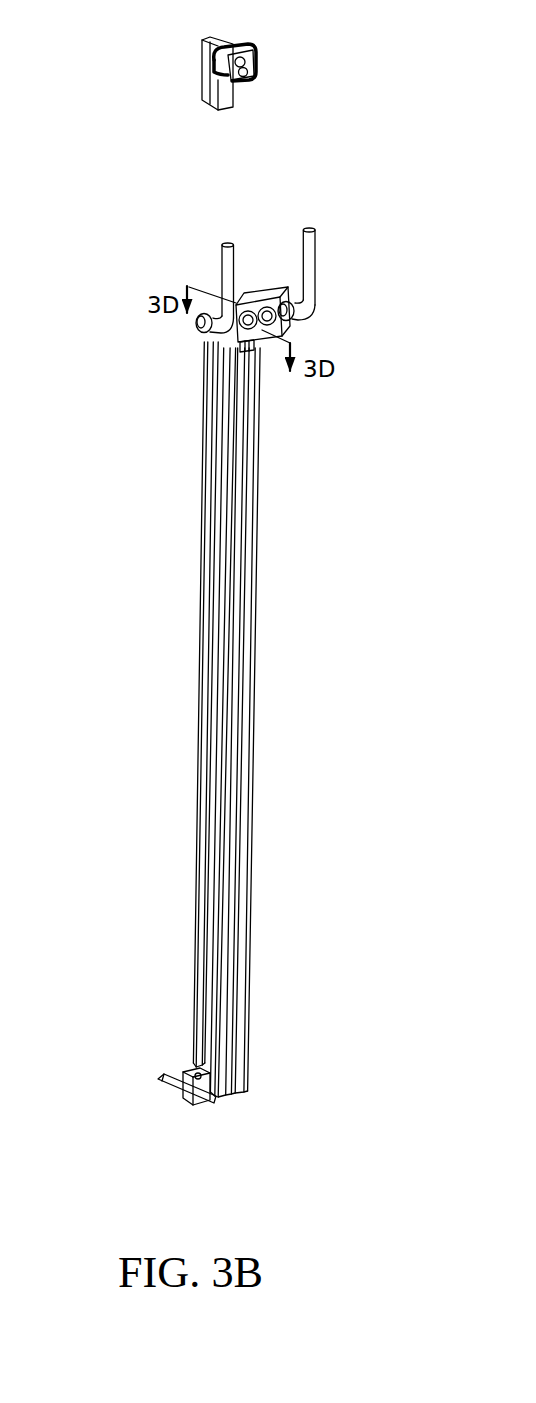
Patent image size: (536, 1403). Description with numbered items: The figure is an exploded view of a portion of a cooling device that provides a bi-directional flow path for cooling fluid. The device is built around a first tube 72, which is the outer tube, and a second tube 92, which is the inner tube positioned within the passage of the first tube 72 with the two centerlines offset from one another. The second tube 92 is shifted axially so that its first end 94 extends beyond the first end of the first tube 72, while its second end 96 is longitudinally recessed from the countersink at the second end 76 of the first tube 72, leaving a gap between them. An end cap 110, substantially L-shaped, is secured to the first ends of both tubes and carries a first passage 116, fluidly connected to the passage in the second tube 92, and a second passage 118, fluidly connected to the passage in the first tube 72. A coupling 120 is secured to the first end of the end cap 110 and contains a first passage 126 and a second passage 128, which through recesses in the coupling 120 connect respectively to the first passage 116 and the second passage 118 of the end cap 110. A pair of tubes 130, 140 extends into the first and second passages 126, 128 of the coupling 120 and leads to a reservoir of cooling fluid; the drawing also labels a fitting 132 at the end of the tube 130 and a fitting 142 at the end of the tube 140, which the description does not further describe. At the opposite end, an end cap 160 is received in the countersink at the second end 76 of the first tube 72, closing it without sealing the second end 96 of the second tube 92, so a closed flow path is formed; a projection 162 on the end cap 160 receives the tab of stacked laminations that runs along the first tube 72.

The first tube 72 is at (258, 655).
The second end of the first tube 76 is at (255, 1092).
The second tube 92 is at (200, 718).
The first end of the second tube 94 is at (203, 445).
The second end of the second tube 96 is at (194, 1053).
The end cap 110 is at (203, 60).
The first passage 116 is at (258, 52).
The second passage 118 is at (250, 81).
The coupling 120 is at (251, 301).
The first passage 126 is at (234, 336).
The second passage 128 is at (279, 327).
The tube 130 is at (220, 260).
The first tube fitting 132 is at (192, 331).
The tube 140 is at (320, 253).
The second tube fitting 142 is at (278, 298).
The end cap 160 is at (205, 1105).
The projection 162 is at (165, 1081).